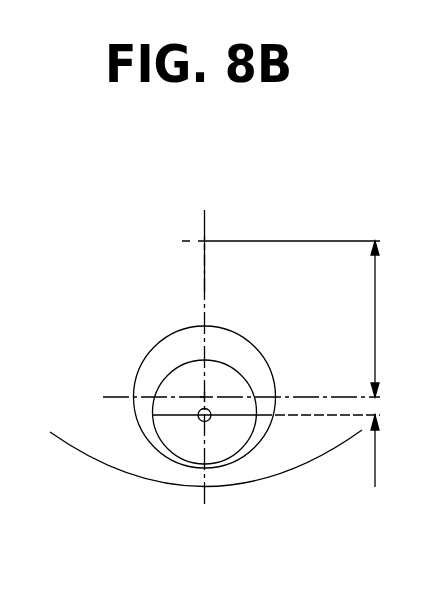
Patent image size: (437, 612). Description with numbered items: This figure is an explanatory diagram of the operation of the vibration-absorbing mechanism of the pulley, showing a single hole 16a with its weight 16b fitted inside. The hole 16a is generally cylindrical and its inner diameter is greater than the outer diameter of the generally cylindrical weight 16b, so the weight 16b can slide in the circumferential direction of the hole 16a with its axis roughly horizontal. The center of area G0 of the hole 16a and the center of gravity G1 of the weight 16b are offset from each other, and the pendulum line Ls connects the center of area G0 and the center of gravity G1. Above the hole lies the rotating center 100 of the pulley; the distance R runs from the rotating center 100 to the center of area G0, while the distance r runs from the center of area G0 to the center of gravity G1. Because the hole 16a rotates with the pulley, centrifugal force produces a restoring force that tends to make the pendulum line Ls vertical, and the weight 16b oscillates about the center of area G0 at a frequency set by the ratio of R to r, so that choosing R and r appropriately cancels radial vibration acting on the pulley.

The rotating center 100 is at (205, 241).
The hole 16a is at (240, 330).
The weight 16b is at (167, 438).
The center of area G0 is at (204, 397).
The center of gravity G1 is at (200, 421).
The pendulum line Ls is at (205, 292).
The distance from the rotating center to the center of area R is at (363, 319).
The distance between the center of area and the center of gravity r is at (368, 451).